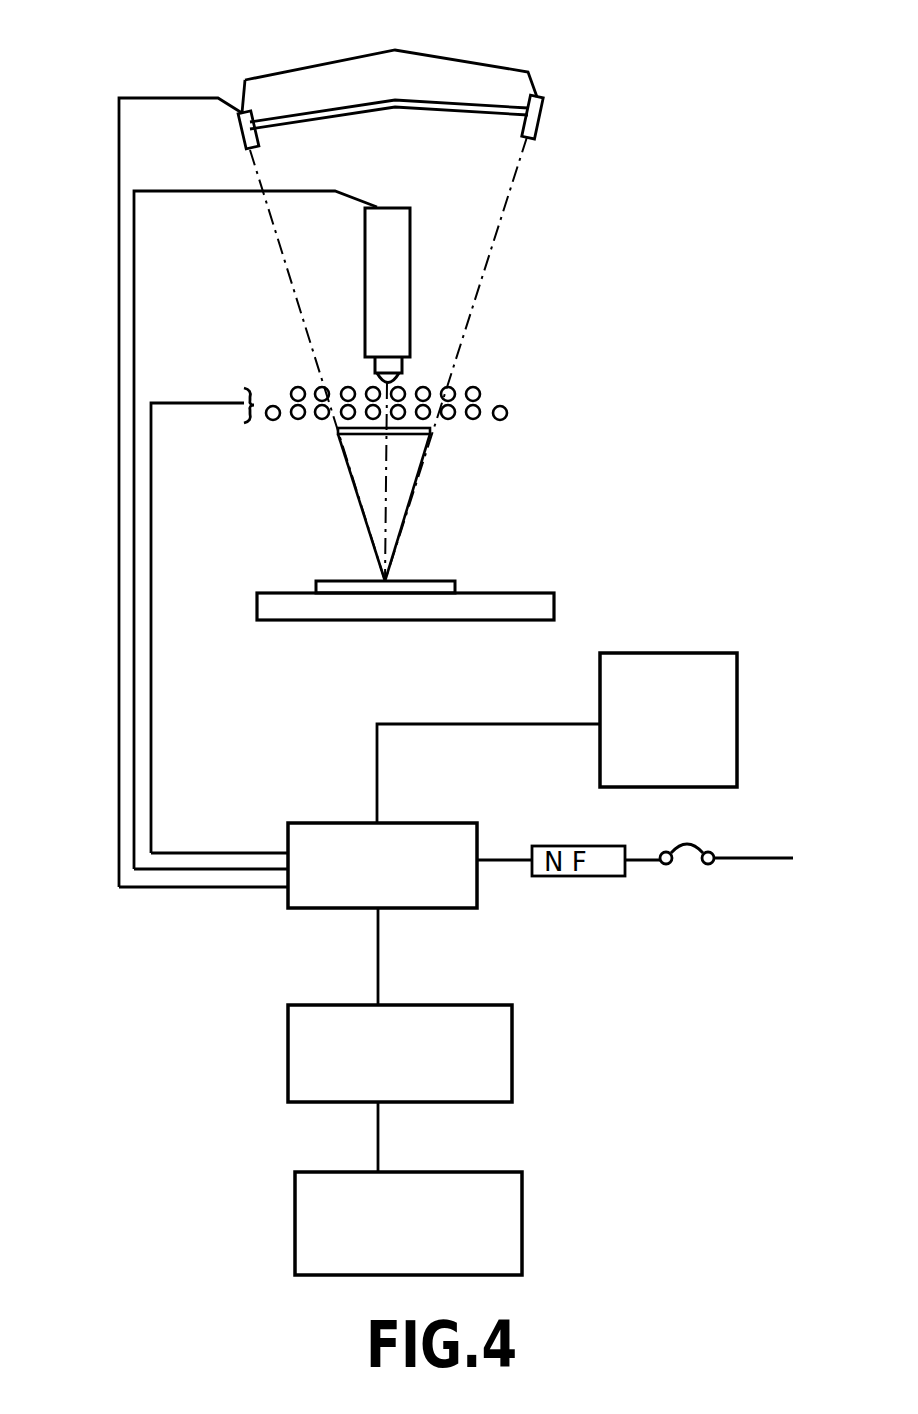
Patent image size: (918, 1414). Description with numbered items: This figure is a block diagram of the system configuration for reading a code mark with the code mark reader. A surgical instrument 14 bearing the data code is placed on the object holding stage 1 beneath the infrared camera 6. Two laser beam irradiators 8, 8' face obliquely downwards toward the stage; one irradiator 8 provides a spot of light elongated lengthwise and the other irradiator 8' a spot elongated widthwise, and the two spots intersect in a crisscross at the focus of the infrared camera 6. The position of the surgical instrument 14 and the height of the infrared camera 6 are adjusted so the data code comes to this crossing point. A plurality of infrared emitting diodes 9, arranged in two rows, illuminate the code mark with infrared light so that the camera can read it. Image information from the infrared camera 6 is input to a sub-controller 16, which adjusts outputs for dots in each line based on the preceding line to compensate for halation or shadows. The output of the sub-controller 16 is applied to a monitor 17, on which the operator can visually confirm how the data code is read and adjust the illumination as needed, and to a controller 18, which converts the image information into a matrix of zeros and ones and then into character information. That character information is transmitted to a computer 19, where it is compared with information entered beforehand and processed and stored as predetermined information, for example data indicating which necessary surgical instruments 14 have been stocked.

The object holding stage 1 is at (513, 602).
The infrared camera 6 is at (393, 250).
The laser beam irradiator 8 is at (227, 76).
The laser beam irradiator 8' is at (579, 94).
The infrared emitting diode 9 is at (503, 404).
The surgical instrument 14 is at (400, 585).
The sub-controller 16 is at (305, 823).
The monitor 17 is at (740, 663).
The controller 18 is at (290, 1018).
The computer 19 is at (295, 1195).